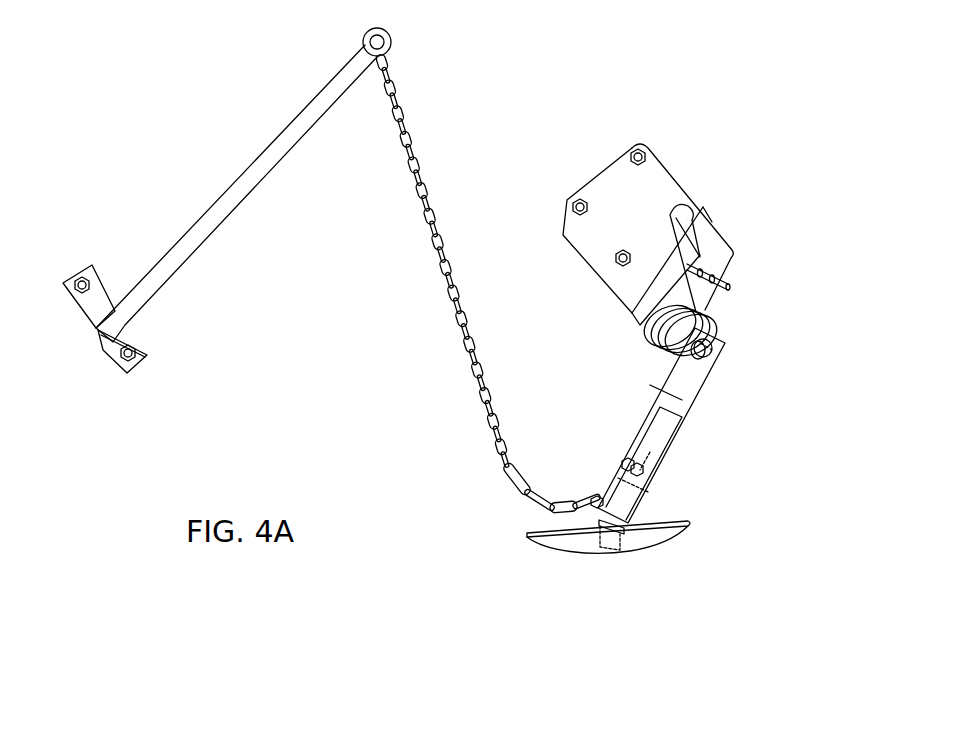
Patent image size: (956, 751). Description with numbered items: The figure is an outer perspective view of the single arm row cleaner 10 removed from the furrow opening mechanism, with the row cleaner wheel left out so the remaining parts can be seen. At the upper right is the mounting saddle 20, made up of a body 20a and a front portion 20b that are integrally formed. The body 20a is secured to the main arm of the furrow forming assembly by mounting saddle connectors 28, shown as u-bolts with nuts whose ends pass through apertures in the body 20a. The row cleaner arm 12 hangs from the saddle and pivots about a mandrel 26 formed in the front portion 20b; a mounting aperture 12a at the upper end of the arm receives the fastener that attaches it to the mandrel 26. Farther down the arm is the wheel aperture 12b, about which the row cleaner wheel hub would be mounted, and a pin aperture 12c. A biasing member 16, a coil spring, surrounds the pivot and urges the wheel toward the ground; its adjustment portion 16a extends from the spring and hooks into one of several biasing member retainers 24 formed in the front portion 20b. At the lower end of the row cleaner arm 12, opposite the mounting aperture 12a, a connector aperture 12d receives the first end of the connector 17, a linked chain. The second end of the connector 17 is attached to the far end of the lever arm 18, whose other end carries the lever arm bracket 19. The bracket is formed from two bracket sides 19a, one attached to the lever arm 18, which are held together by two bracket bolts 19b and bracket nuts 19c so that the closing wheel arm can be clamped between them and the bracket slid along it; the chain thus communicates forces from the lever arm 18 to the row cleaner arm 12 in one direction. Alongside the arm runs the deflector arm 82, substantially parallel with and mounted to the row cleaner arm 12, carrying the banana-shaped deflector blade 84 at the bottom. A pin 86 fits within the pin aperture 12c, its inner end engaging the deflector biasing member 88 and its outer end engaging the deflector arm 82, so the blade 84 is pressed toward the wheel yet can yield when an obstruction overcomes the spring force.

The single arm row cleaner 10 is at (705, 110).
The row cleaner arm 12 is at (620, 439).
The mounting aperture 12a is at (716, 355).
The wheel aperture 12b is at (642, 462).
The pin aperture 12c is at (620, 460).
The connector aperture 12d is at (600, 528).
The biasing member 16 is at (707, 315).
The adjustment portion 16a is at (702, 207).
The connector 17 is at (488, 273).
The lever arm 18 is at (220, 202).
The lever arm bracket 19 is at (148, 365).
The bracket sides 19a is at (130, 337).
The bracket bolts 19b is at (137, 357).
The bracket nuts 19c is at (95, 283).
The mounting saddle 20 is at (714, 187).
The body 20a is at (650, 217).
The front portion 20b is at (722, 245).
The biasing member retainers 24 is at (712, 262).
The mandrel 26 is at (715, 335).
The mounting saddle connectors 28 is at (640, 147).
The deflector arm 82 is at (663, 412).
The deflector blade 84 is at (626, 552).
The pin 86 is at (645, 470).
The deflector biasing member 88 is at (520, 480).